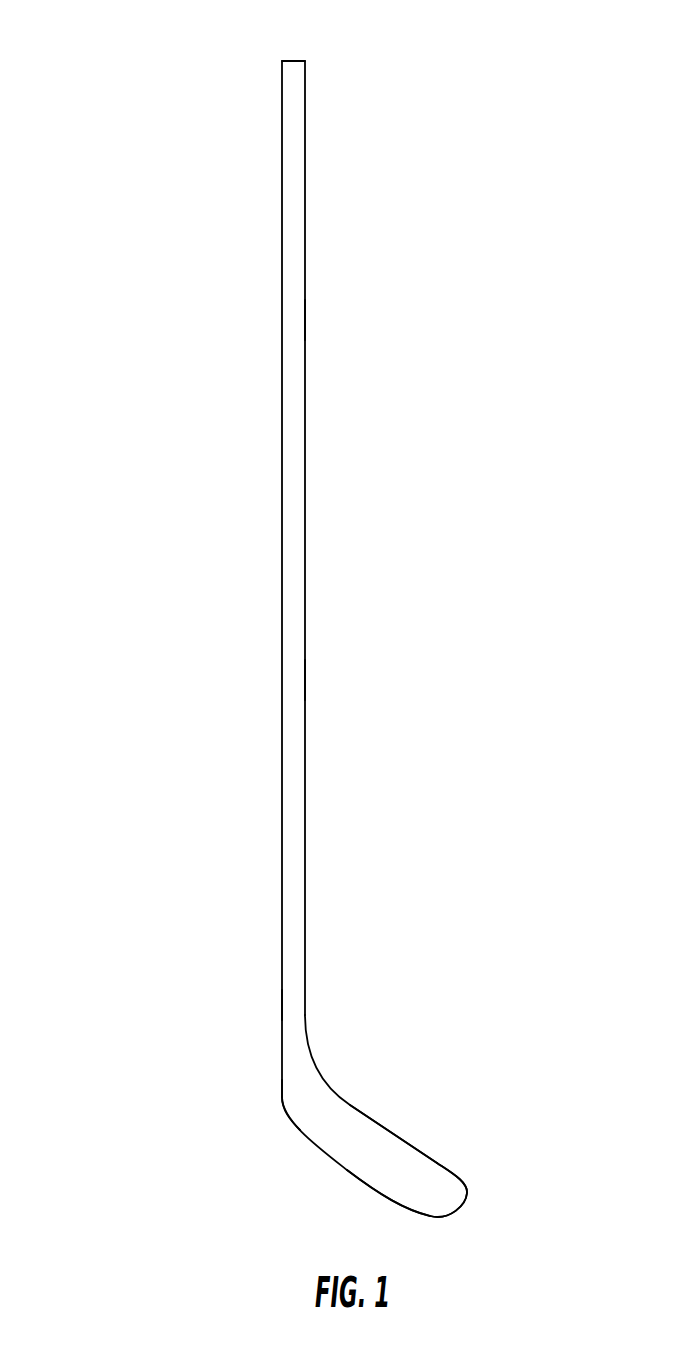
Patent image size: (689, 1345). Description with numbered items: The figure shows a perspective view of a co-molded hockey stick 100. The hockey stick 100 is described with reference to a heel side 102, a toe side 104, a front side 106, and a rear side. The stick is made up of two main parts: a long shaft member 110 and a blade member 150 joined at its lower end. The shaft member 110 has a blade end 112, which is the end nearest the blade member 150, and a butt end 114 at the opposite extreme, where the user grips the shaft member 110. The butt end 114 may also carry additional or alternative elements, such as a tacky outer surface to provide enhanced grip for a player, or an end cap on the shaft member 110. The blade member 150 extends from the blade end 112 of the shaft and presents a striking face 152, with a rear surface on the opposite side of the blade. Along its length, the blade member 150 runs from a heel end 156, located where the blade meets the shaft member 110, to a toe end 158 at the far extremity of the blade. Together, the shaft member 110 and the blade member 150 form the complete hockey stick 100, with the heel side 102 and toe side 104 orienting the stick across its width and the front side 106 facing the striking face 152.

The co-molded hockey stick 100 is at (307, 617).
The heel side 102 is at (227, 550).
The toe side 104 is at (352, 818).
The front side 106 is at (298, 683).
The shaft member 110 is at (297, 328).
The blade end 112 is at (295, 1008).
The butt end 114 is at (295, 102).
The blade member 150 is at (350, 1128).
The striking face 152 is at (370, 1159).
The heel end 156 is at (282, 1097).
The toe end 158 is at (465, 1189).